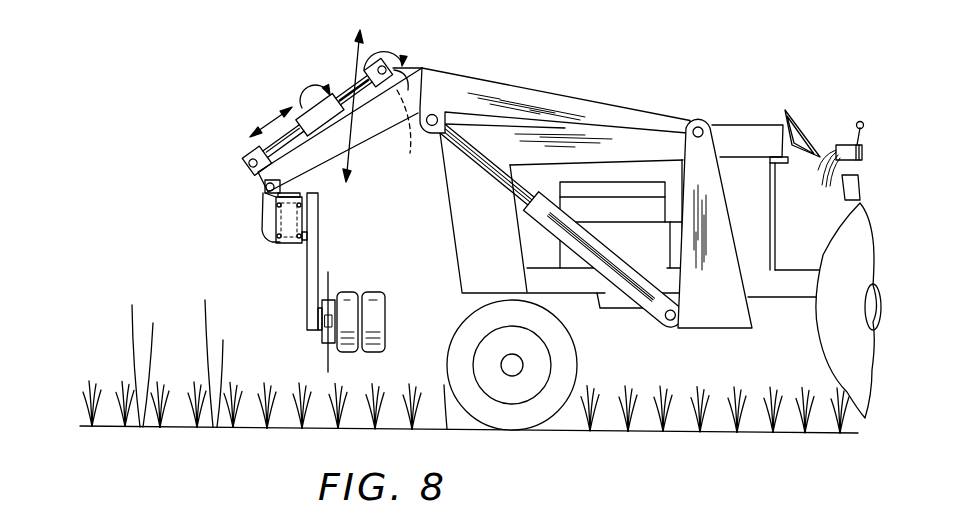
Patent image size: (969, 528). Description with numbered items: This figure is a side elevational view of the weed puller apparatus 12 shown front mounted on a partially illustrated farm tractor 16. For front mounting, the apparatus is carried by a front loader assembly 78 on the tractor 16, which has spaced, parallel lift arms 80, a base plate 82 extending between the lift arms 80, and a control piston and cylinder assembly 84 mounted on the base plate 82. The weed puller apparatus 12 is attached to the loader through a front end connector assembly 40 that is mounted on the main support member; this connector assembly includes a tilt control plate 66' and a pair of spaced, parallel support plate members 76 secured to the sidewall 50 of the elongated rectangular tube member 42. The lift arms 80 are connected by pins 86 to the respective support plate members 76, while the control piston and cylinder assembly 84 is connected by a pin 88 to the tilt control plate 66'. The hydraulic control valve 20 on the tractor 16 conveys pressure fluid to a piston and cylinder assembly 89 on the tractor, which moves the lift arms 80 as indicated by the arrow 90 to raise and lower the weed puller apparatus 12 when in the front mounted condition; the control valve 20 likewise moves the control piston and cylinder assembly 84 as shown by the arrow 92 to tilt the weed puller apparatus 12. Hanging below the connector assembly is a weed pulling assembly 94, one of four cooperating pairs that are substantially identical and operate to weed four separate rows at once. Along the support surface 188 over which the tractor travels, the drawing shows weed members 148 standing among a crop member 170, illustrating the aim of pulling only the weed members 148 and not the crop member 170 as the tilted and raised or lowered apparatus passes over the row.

The weed puller apparatus 12 is at (314, 279).
The farm tractor 16 is at (746, 111).
The hydraulic control valve 20 is at (850, 147).
The front end connector assembly 40 is at (555, 92).
The tube member 42 is at (312, 230).
The sidewall 50 is at (276, 228).
The tilt control plate 66' is at (245, 130).
The support plate members 76 is at (262, 215).
The front loader assembly 78 is at (420, 56).
The lift arms 80 is at (617, 107).
The base plate 82 is at (409, 151).
The control piston and cylinder assembly 84 is at (324, 111).
The pins 86 is at (263, 190).
The pin 88 is at (337, 90).
The piston and cylinder assembly 89 is at (573, 257).
The arrow 90 is at (342, 64).
The arrow 92 is at (277, 117).
The weed pulling assembly 94 is at (296, 320).
The weed members 148 is at (210, 345).
The crop member 170 is at (240, 410).
The support surface 188 is at (648, 433).